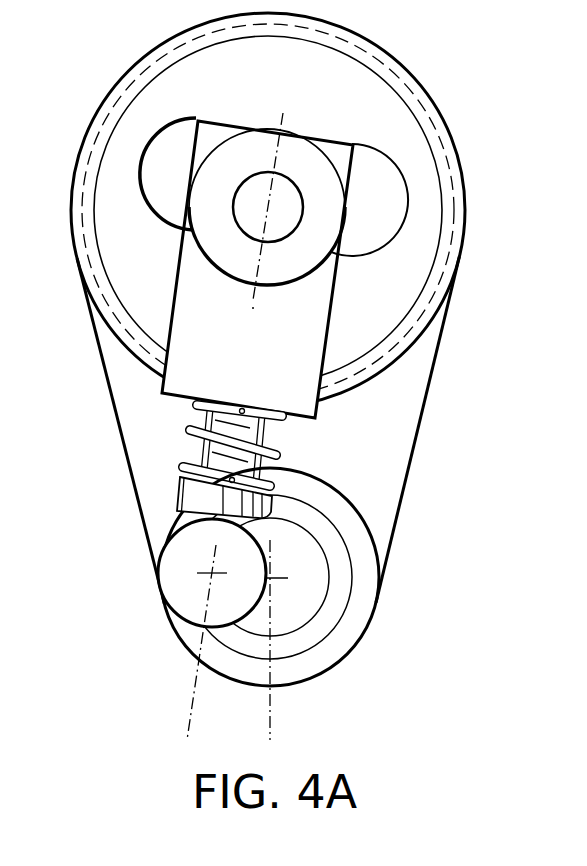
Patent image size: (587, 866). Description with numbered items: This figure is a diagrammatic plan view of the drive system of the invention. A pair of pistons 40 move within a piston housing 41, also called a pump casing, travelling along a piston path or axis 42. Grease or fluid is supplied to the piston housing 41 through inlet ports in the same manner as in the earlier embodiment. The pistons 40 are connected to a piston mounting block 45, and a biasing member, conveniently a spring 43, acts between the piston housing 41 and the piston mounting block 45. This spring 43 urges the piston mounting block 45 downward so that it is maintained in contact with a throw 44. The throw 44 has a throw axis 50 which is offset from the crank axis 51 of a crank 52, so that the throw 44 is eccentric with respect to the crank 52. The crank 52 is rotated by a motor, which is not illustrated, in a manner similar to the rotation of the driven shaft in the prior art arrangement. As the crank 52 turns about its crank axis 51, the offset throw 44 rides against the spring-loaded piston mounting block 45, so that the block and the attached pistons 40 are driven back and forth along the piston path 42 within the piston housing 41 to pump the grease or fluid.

The pistons 40 is at (207, 415).
The piston housing 41 is at (297, 342).
The piston path 42 is at (187, 723).
The spring 43 is at (187, 462).
The throw 44 is at (270, 630).
The piston mounting block 45 is at (272, 500).
The throw axis 50 is at (197, 573).
The crank axis 51 is at (288, 578).
The crank 52 is at (317, 607).